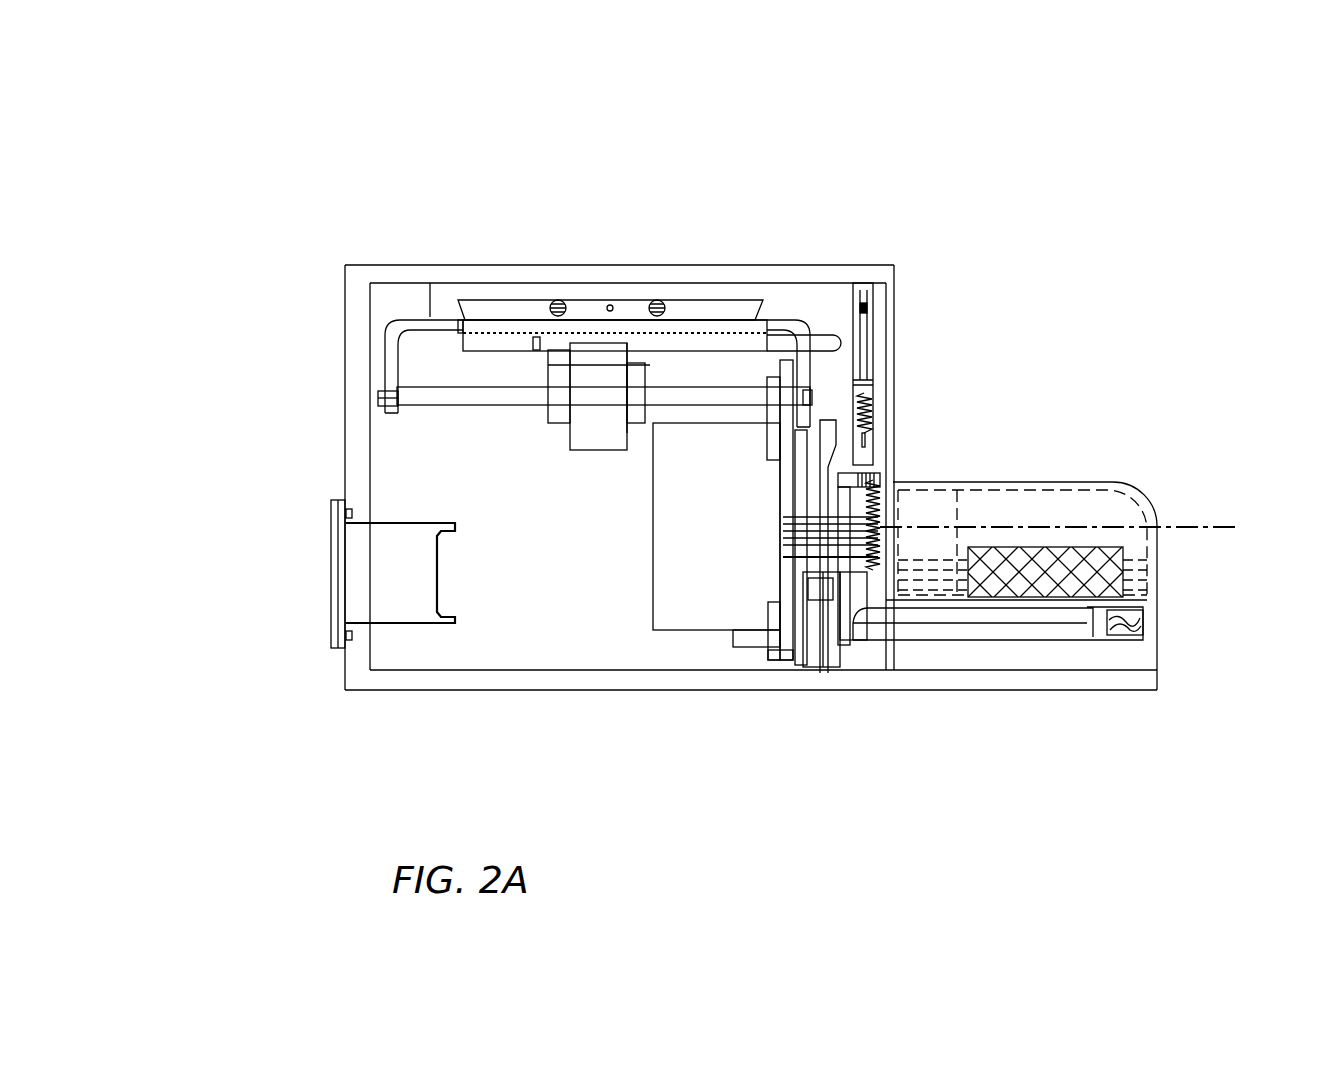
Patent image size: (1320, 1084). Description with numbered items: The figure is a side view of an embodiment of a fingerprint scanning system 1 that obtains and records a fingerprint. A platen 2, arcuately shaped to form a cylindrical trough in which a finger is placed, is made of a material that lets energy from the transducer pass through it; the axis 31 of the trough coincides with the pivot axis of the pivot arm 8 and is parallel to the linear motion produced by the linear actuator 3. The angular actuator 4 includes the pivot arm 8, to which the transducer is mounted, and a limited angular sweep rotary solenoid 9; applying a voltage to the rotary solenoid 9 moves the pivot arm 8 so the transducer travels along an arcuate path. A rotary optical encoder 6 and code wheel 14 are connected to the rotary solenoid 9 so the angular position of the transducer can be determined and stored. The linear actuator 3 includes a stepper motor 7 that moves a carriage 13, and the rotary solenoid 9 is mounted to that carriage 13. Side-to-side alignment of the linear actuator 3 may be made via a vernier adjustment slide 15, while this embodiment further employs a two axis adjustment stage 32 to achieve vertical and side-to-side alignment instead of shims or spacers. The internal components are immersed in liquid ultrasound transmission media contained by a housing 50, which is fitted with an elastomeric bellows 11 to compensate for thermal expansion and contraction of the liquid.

The system 1 is at (758, 717).
The platen 2 is at (1027, 510).
The linear actuator 3 is at (388, 350).
The angular actuator 4 is at (682, 595).
The rotary optical encoder 6 is at (845, 668).
The stepper motor 7 is at (583, 438).
The pivot arm 8 is at (1027, 635).
The rotary solenoid 9 is at (733, 508).
The elastomeric bellows 11 is at (390, 577).
The carriage 13 is at (632, 467).
The code wheel 14 is at (830, 415).
The vernier adjustment slide 15 is at (710, 306).
The axis 31 is at (1217, 527).
The two axis adjustment stage 32 is at (867, 300).
The housing 50 is at (428, 688).